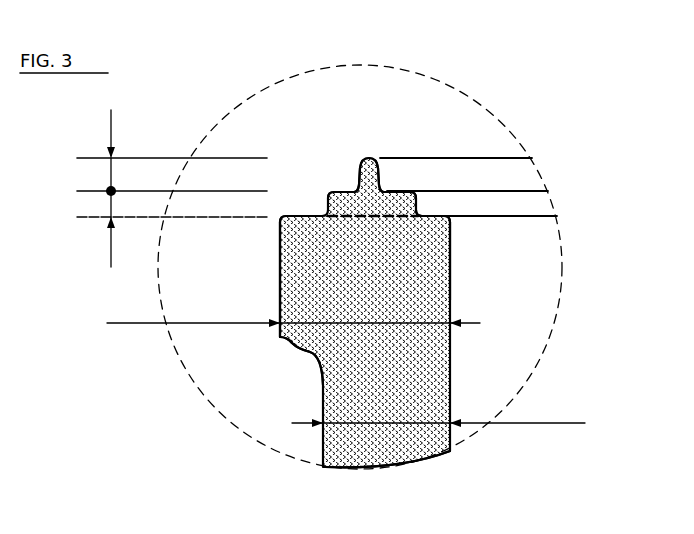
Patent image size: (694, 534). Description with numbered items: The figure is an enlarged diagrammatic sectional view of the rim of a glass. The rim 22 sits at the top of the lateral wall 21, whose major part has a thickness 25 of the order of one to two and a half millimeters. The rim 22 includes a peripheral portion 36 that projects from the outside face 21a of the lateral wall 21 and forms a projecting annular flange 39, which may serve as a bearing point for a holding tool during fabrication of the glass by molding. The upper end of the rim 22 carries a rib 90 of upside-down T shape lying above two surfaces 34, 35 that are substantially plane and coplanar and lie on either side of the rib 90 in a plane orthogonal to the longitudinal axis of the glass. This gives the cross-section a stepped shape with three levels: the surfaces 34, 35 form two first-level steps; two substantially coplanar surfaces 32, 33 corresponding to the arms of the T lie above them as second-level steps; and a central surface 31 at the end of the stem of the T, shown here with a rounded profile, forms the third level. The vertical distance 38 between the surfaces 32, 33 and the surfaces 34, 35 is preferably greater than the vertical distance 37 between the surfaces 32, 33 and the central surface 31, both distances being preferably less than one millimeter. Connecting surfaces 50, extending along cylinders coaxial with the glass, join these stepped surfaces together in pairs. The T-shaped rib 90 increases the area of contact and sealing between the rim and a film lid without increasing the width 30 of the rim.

The lateral wall 21 is at (448, 382).
The outside face of the lateral wall 21a is at (323, 442).
The rim 22 is at (447, 243).
The thickness of the lateral wall 25 is at (438, 412).
The width of the rim 30 is at (293, 312).
The central surface 31 is at (365, 153).
The second level surface 32 is at (338, 182).
The second level surface 33 is at (399, 186).
The first level surface 34 is at (297, 209).
The first level surface 35 is at (435, 211).
The peripheral portion 36 is at (290, 258).
The vertical distance 37 is at (172, 153).
The vertical distance 38 is at (172, 212).
The flange 39 is at (311, 355).
The connecting surfaces 50 is at (537, 203).
The rib 90 is at (373, 216).